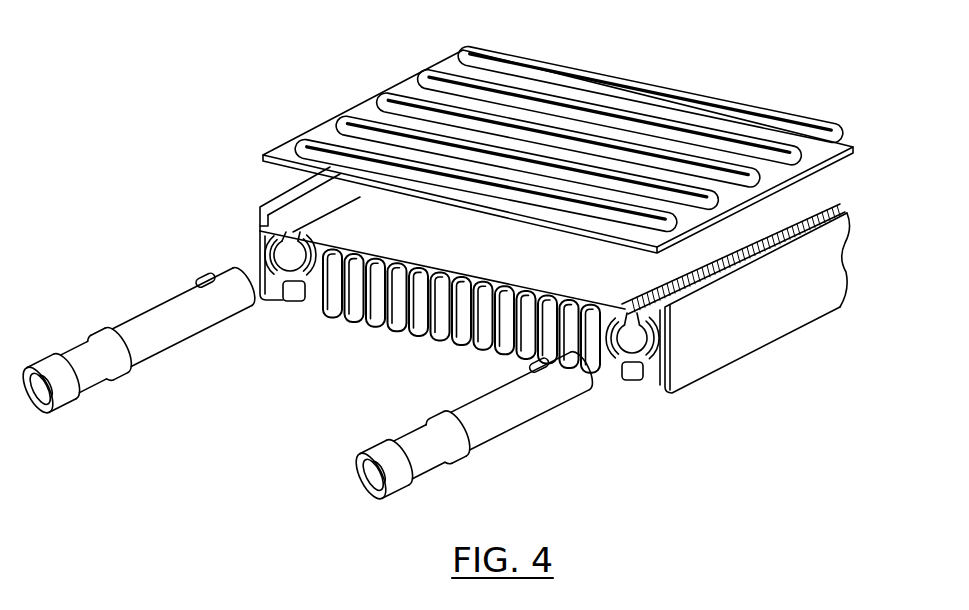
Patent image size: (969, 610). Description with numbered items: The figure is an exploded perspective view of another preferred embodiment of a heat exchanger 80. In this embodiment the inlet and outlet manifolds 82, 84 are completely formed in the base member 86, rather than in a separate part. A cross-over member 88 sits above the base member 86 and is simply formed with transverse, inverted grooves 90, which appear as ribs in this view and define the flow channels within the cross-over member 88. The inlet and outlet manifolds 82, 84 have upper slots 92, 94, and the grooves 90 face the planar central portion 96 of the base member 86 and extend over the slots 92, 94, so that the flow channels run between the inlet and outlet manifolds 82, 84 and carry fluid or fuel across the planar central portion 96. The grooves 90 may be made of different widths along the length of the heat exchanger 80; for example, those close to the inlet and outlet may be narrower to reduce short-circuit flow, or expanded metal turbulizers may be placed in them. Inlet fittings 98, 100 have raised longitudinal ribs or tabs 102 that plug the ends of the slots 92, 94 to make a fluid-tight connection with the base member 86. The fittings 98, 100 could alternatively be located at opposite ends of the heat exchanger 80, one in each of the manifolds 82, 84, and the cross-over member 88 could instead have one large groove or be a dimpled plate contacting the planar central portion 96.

The heat exchanger 80 is at (218, 81).
The inlet manifold 82 is at (295, 270).
The outlet manifold 84 is at (628, 378).
The base member 86 is at (773, 313).
The cross-over member 88 is at (315, 130).
The grooves 90 is at (403, 98).
The upper slot 92 is at (298, 202).
The upper slot 94 is at (635, 306).
The planar central portion 96 is at (460, 255).
The inlet fitting 98 is at (152, 313).
The inlet fitting 100 is at (466, 402).
The raised longitudinal ribs or tabs 102 is at (212, 279).